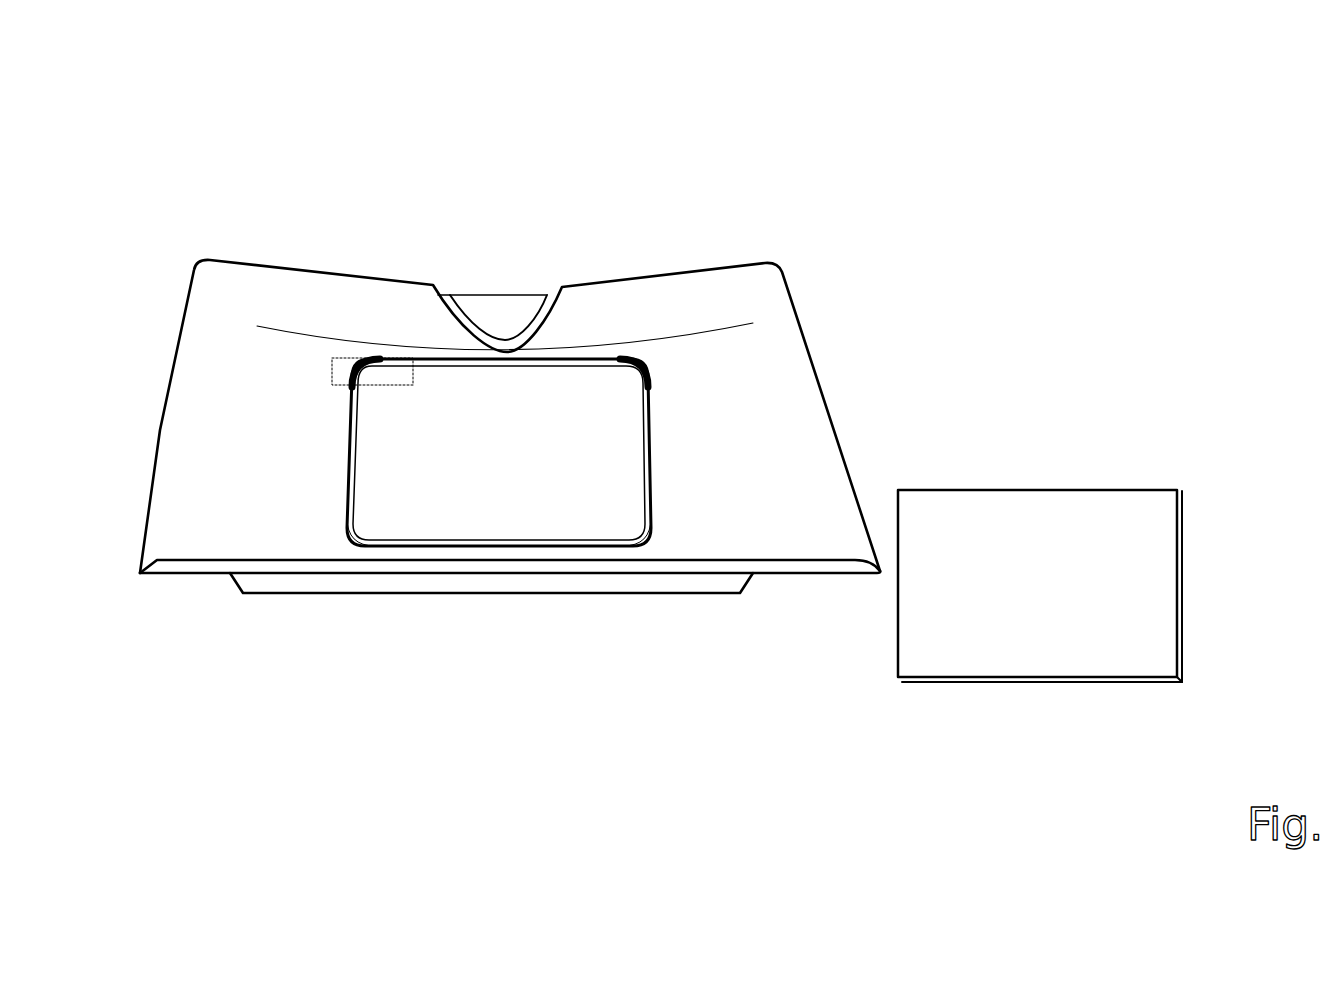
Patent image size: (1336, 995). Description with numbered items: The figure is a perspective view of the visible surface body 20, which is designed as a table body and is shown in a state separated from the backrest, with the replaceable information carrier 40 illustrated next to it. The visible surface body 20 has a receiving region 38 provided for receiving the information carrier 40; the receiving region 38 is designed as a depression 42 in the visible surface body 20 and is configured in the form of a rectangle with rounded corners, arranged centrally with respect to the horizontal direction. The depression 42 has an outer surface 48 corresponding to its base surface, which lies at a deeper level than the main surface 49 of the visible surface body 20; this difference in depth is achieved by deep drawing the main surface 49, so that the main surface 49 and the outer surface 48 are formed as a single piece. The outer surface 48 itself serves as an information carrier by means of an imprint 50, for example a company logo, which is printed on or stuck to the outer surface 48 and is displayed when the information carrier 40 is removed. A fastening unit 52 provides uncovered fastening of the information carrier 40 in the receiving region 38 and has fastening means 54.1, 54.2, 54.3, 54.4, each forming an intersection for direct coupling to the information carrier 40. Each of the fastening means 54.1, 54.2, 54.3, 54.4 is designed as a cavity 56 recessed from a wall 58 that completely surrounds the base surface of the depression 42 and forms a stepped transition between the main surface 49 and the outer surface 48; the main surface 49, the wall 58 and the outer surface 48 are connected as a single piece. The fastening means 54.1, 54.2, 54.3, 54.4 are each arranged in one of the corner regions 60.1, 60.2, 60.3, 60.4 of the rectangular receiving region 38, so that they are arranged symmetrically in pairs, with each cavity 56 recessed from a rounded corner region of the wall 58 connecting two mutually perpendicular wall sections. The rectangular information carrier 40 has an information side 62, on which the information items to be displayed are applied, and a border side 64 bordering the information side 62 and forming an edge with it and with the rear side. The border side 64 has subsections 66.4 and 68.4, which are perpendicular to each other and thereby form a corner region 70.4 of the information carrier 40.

The visible surface body 20 is at (759, 247).
The receiving region 38 is at (664, 433).
The information carrier 40 is at (1097, 517).
The depression 42 is at (470, 392).
The outer surface 48 is at (442, 378).
The main surface 49 is at (257, 352).
The imprint 50 is at (491, 476).
The fastening unit 52 is at (665, 377).
The fastening means 54.1 is at (352, 357).
The fastening means 54.2 is at (643, 362).
The fastening means 54.3 is at (346, 540).
The fastening means 54.4 is at (659, 535).
The cavity 56 is at (377, 380).
The wall 58 is at (506, 478).
The corner region 60.1 is at (398, 357).
The corner region 60.2 is at (620, 383).
The corner region 60.3 is at (374, 527).
The corner region 60.4 is at (640, 527).
The information side 62 is at (1062, 500).
The border side 64 is at (1013, 490).
The subsection 66.4 is at (1037, 683).
The subsection 68.4 is at (1180, 617).
The corner region 70.4 is at (1160, 707).